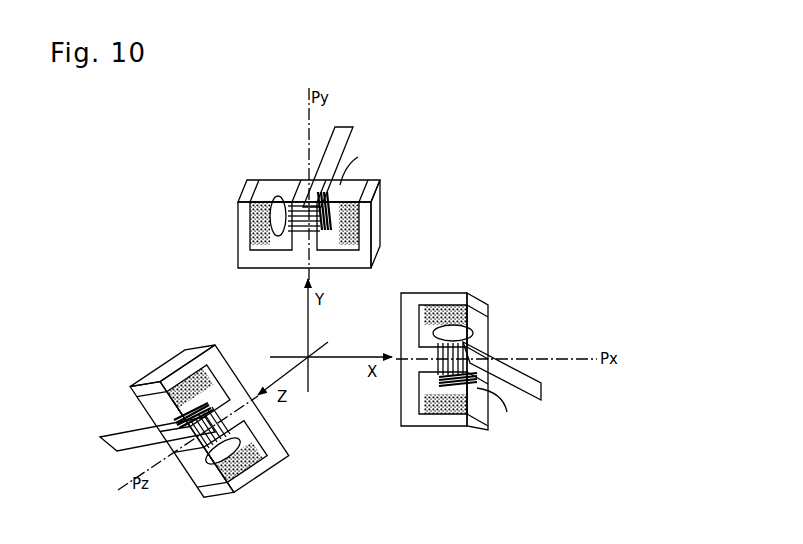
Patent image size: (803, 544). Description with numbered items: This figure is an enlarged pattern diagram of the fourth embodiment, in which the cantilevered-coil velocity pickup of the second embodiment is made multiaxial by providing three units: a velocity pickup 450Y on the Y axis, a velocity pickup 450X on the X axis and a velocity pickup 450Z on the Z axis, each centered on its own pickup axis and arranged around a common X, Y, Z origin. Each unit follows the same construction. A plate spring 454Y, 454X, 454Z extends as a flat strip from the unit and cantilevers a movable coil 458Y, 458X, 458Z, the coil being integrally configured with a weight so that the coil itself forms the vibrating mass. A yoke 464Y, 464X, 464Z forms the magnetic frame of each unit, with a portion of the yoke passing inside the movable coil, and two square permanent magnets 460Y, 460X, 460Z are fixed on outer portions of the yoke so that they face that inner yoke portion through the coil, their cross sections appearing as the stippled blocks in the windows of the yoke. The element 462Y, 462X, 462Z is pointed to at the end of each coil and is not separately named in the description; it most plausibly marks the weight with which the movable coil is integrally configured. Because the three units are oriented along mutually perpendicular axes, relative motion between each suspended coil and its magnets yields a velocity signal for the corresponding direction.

The velocity pickup (Y axis) 450Y is at (395, 195).
The plate spring 454Y is at (343, 140).
The movable coil 458Y is at (292, 192).
The permanent magnets 460Y is at (258, 207).
The bobbin of Y unit 462Y is at (278, 215).
The yoke 464Y is at (258, 262).
The velocity pickup (X axis) 450X is at (533, 303).
The plate spring 454X is at (524, 392).
The movable coil 458X is at (470, 348).
The permanent magnets 460X is at (457, 403).
The bobbin of X unit 462X is at (455, 384).
The yoke 464X is at (408, 418).
The velocity pickup (Z axis) 450Z is at (148, 368).
The plate spring 454Z is at (128, 446).
The movable coil 458Z is at (190, 452).
The permanent magnets 460Z is at (236, 458).
The bobbin of Z unit 462Z is at (250, 450).
The yoke 464Z is at (248, 413).